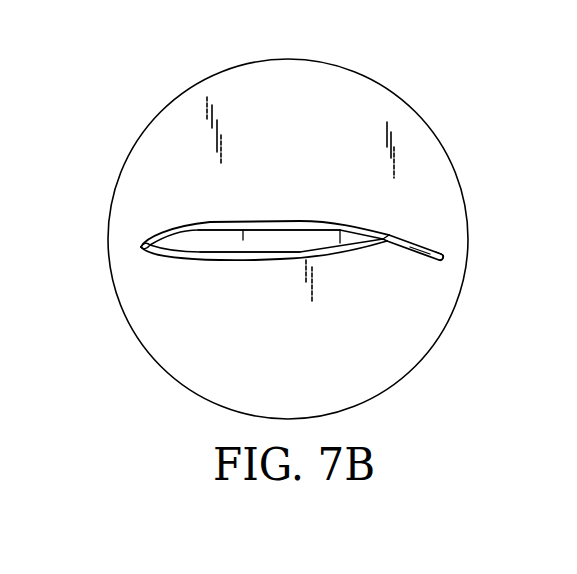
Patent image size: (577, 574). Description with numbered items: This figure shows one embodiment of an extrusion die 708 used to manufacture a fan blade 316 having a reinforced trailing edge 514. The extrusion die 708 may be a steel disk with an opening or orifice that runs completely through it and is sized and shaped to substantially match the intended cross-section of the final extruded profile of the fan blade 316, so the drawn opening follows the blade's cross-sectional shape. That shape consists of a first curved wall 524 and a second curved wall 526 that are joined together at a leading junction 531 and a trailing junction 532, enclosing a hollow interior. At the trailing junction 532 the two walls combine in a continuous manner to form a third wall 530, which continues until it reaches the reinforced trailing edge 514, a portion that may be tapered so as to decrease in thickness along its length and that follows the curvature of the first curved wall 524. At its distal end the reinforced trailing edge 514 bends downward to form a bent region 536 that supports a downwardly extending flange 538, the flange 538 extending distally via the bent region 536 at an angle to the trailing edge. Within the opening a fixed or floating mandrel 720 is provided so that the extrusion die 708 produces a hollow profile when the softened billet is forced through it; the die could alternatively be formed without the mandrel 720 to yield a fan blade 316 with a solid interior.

The extrusion die 708 is at (168, 108).
The fan blade 316 is at (281, 188).
The first curved wall 524 is at (218, 221).
The second curved wall 526 is at (253, 262).
The leading junction 531 is at (141, 243).
The trailing junction 532 is at (390, 234).
The mandrel 720 is at (207, 242).
The third wall 530 is at (411, 243).
The bent region 536 is at (445, 253).
The downwardly extending flange 538 is at (446, 262).
The reinforced trailing edge 514 is at (419, 264).